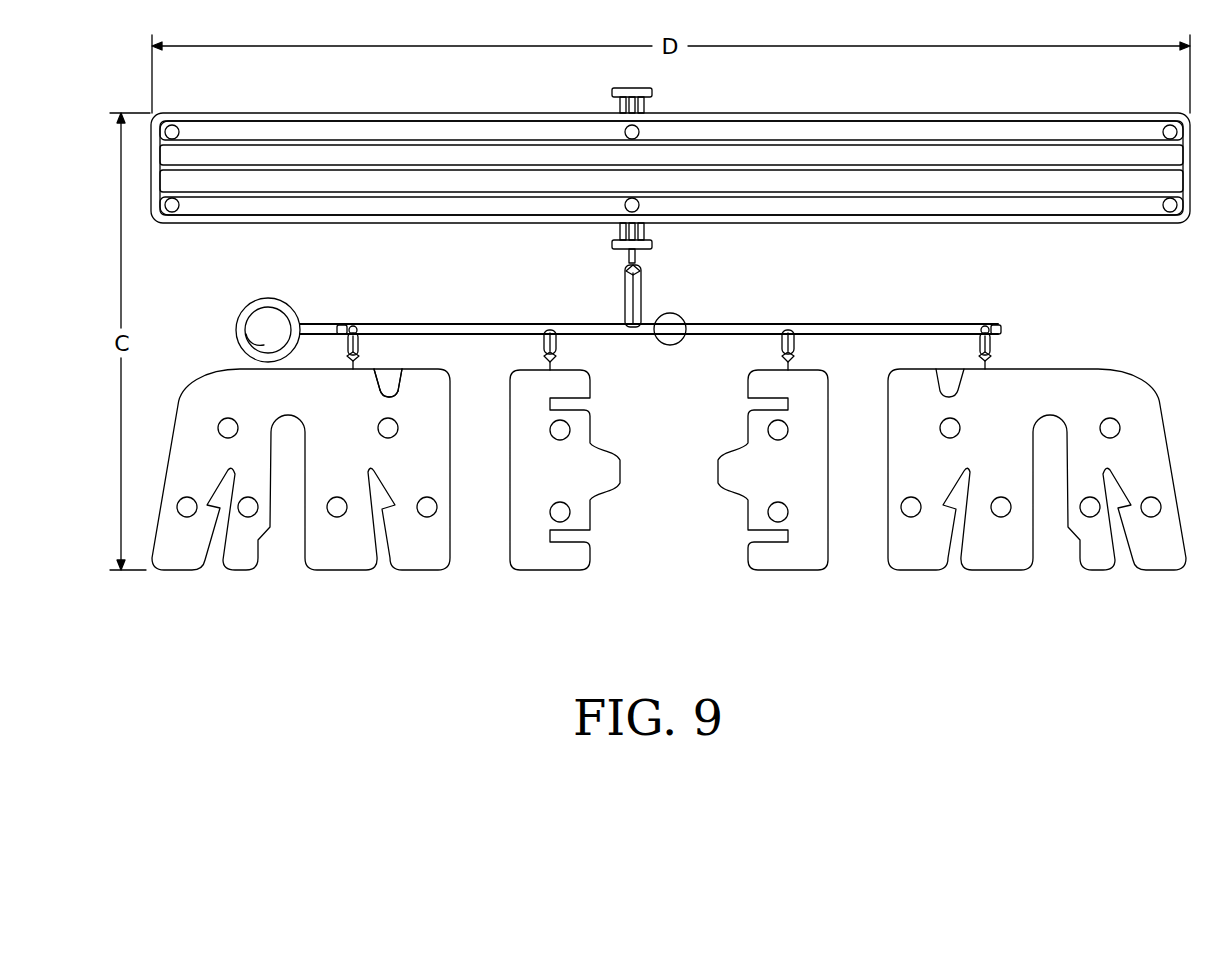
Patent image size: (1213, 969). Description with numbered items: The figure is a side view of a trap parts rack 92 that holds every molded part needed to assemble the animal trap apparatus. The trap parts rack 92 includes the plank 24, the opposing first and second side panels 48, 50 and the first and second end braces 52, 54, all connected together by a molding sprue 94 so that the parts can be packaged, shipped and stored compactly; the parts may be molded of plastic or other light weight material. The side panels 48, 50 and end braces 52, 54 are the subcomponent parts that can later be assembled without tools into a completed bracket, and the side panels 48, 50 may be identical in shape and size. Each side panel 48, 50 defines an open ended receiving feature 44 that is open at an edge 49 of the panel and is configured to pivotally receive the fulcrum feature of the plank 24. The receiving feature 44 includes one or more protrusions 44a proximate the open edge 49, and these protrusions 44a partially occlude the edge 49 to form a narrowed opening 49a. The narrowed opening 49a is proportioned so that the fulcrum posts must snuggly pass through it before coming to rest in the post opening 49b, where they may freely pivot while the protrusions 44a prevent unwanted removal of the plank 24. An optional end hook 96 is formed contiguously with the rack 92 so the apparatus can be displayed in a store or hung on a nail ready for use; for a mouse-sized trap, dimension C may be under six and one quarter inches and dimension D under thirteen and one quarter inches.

The plank 24 is at (363, 224).
The receiving feature 44 is at (373, 375).
The protrusions 44a is at (377, 384).
The side panel 48 is at (306, 477).
The edge 49 is at (312, 369).
The narrowed opening 49a is at (391, 374).
The post opening 49b is at (384, 408).
The side panel 50 is at (990, 562).
The first end brace 52 is at (553, 574).
The second end brace 54 is at (787, 572).
The trap parts rack 92 is at (447, 618).
The molding sprue 94 is at (722, 323).
The end hook 96 is at (236, 346).